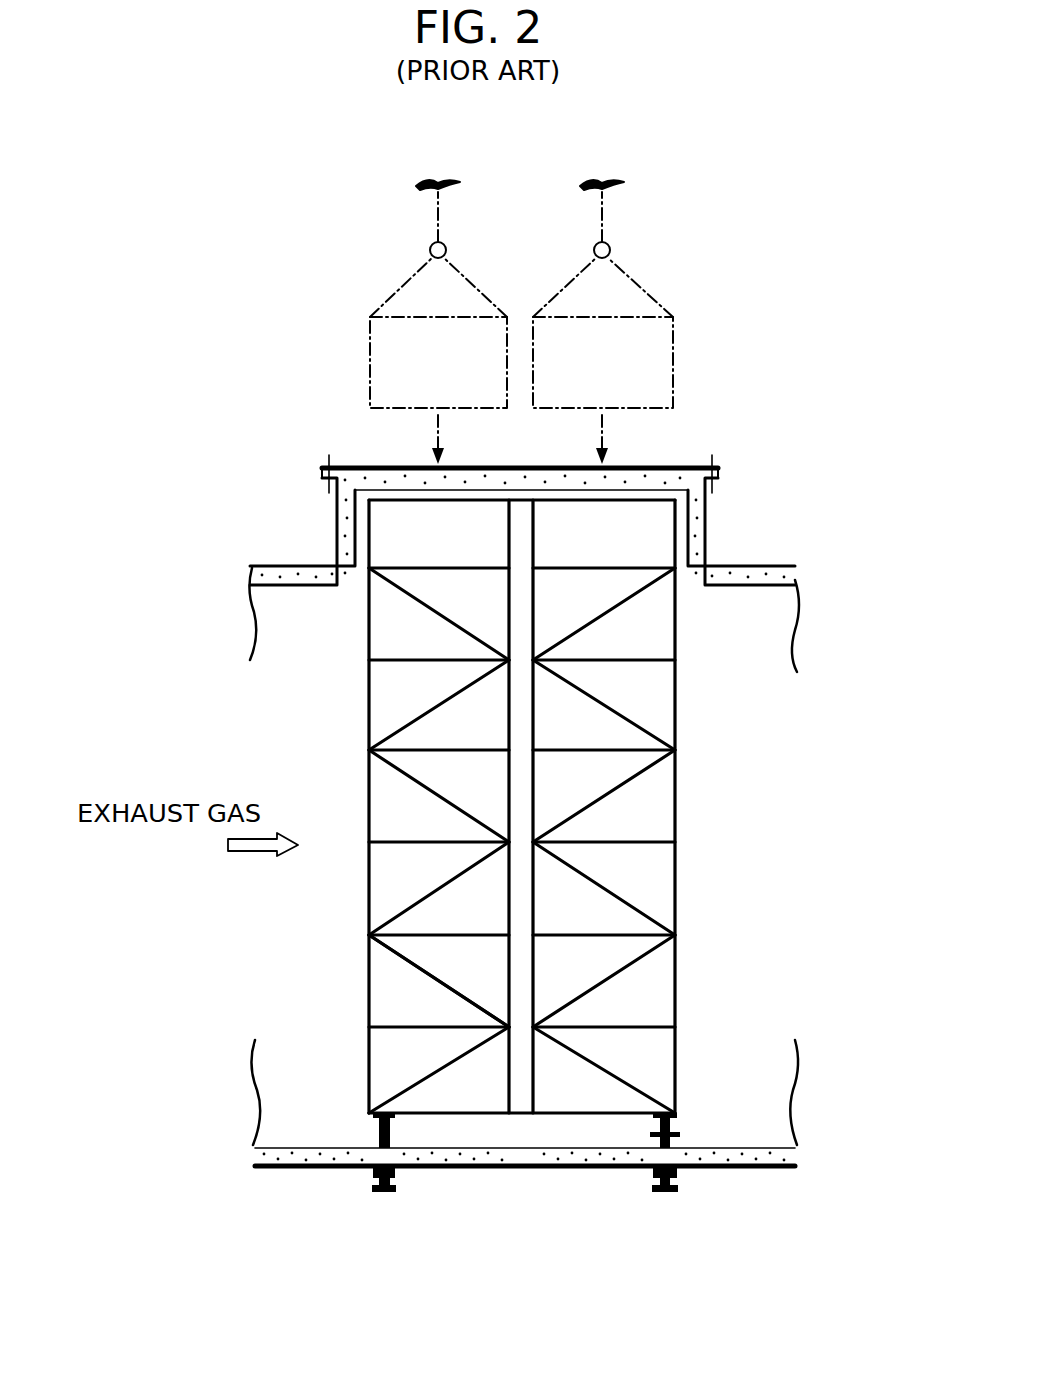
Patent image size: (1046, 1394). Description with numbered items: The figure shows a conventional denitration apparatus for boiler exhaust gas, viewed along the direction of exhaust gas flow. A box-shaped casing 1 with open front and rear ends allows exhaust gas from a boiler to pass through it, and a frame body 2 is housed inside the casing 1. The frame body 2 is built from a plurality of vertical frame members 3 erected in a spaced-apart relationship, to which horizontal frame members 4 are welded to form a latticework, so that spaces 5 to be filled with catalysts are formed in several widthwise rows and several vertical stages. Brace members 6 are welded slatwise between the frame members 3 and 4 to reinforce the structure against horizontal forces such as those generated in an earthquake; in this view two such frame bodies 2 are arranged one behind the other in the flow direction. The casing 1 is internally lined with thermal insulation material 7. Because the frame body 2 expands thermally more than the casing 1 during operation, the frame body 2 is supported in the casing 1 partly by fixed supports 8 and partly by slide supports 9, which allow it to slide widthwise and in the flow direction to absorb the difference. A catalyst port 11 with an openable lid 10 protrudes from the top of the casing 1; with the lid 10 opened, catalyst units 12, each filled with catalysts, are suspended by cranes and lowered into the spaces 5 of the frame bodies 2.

The casing 1 is at (516, 534).
The frame body 2 is at (515, 875).
The vertical frame members 3 is at (368, 903).
The horizontal frame members 4 is at (433, 1027).
The spaces 5 is at (404, 979).
The brace members 6 is at (438, 887).
The thermal insulation material 7 is at (297, 1170).
The fixed supports 8 is at (372, 1142).
The slide supports 9 is at (672, 1132).
The lid 10 is at (672, 466).
The catalyst port 11 is at (707, 516).
The catalyst units 12 is at (692, 350).